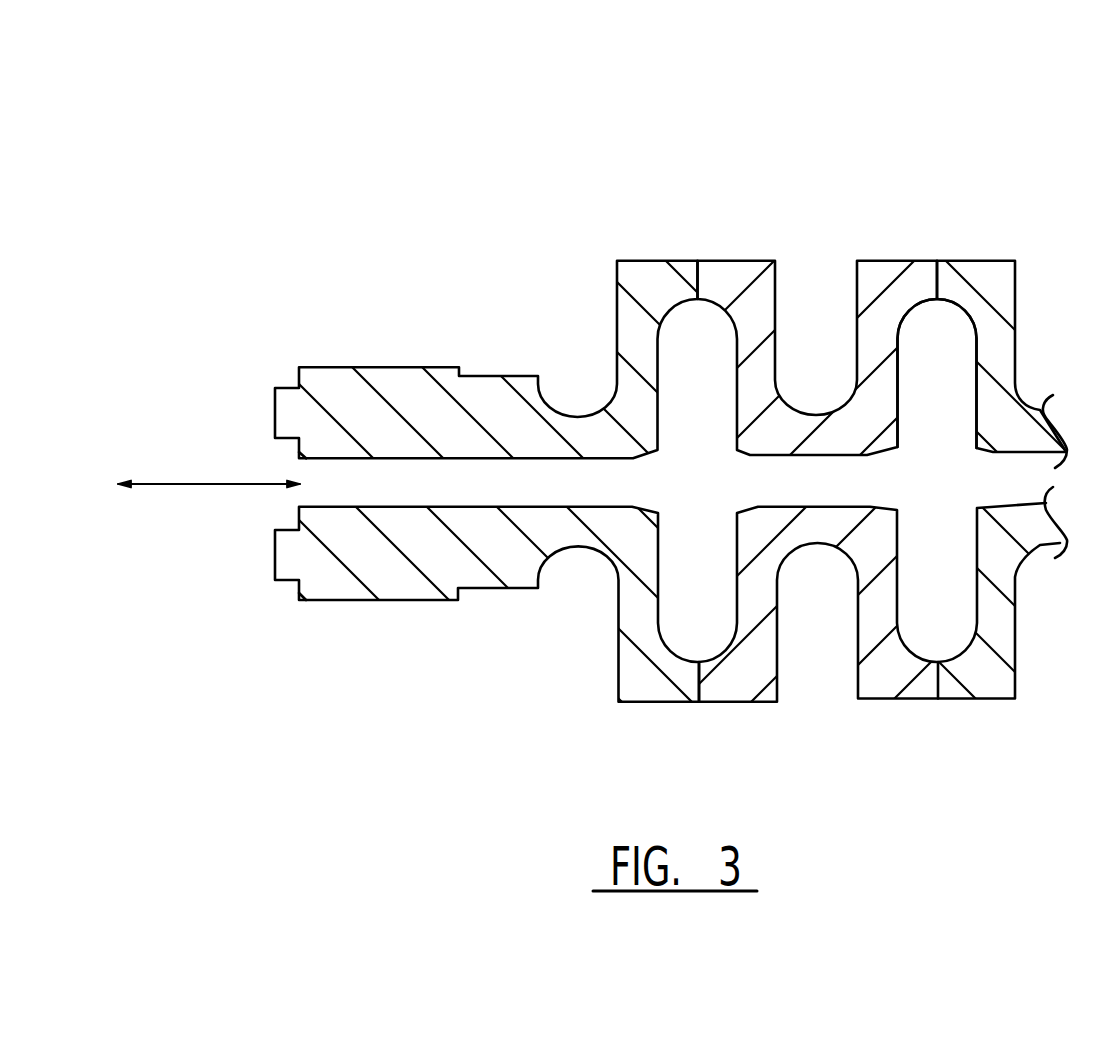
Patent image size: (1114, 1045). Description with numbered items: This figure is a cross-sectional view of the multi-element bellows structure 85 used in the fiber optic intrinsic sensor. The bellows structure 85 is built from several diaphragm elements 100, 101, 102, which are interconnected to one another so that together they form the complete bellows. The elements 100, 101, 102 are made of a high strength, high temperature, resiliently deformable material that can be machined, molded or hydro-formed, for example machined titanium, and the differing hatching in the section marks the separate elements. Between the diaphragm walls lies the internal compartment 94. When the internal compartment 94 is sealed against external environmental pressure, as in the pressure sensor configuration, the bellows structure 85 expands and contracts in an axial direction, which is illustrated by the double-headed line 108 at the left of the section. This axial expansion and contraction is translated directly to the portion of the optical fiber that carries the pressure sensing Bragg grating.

The multi-element bellows structure 85 is at (683, 191).
The internal compartment 94 is at (898, 380).
The diaphragm element 100 is at (458, 562).
The diaphragm element 101 is at (885, 680).
The diaphragm element 102 is at (993, 680).
The line indicating axial direction 108 is at (190, 486).